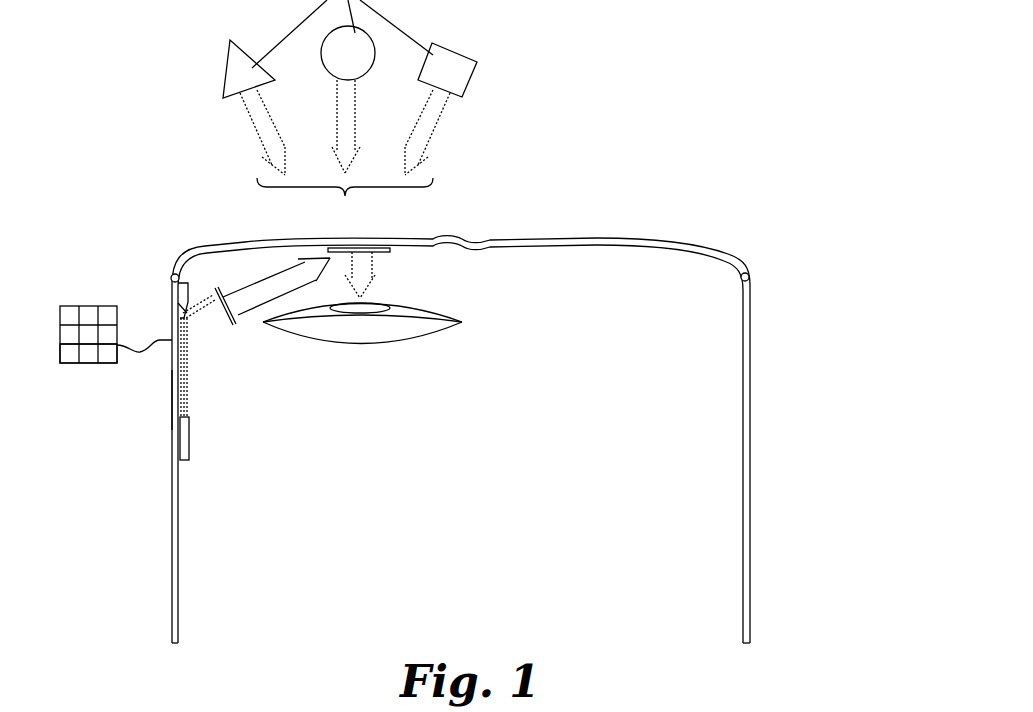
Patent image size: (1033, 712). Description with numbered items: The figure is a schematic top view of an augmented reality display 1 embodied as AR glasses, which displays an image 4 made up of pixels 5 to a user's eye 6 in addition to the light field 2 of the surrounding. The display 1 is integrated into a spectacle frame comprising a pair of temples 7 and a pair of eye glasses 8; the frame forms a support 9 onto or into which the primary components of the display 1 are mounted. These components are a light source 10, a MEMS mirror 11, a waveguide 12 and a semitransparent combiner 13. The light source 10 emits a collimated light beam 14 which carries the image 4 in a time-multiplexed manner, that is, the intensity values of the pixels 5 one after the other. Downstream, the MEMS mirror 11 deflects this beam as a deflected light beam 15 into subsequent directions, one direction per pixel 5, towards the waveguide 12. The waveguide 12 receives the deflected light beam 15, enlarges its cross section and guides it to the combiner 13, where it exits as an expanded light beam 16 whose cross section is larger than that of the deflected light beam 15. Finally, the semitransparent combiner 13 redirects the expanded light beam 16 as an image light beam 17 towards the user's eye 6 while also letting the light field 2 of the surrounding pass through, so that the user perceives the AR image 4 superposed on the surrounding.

The augmented reality display 1 is at (687, 112).
The light field 2 is at (350, 110).
The image 4 is at (87, 305).
The pixels 5 is at (70, 357).
The user's eye 6 is at (433, 325).
The temples 7 is at (172, 398).
The eye glasses 8 is at (245, 245).
The support 9 is at (610, 242).
The light source 10 is at (188, 435).
The MEMS mirror 11 is at (186, 301).
The waveguide 12 is at (233, 325).
The semitransparent combiner 13 is at (387, 250).
The collimated light beam 14 is at (183, 328).
The deflected light beam 15 is at (207, 302).
The expanded light beam 16 is at (250, 295).
The image light beam 17 is at (368, 268).